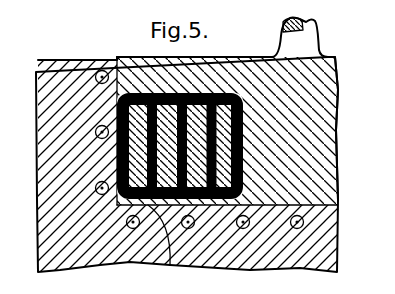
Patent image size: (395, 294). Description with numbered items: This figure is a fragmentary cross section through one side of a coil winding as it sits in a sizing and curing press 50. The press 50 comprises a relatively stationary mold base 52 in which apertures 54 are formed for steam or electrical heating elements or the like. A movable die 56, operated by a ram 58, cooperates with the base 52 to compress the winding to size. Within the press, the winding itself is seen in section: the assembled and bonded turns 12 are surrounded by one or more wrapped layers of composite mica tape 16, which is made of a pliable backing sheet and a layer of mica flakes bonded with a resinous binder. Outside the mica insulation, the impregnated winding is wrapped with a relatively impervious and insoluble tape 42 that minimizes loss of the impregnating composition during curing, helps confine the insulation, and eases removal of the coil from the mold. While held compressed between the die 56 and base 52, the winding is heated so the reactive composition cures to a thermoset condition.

The turns 12 is at (168, 265).
The composite mica tape 16 is at (117, 114).
The impervious tape 42 is at (117, 151).
The sizing and curing press 50 is at (371, 168).
The mold base 52 is at (328, 250).
The apertures 54 is at (98, 70).
The movable die 56 is at (335, 115).
The ram 58 is at (318, 40).